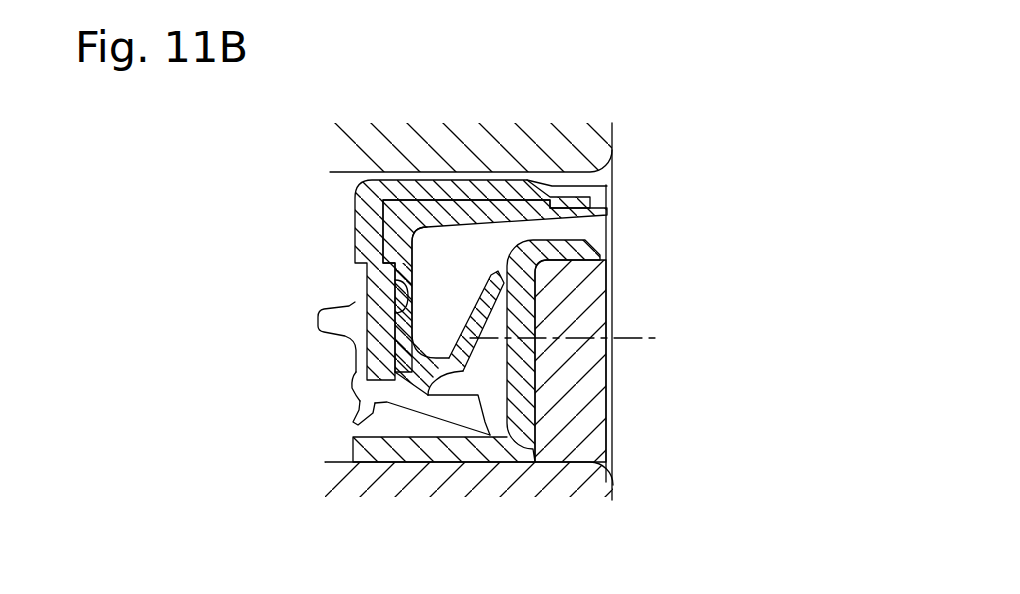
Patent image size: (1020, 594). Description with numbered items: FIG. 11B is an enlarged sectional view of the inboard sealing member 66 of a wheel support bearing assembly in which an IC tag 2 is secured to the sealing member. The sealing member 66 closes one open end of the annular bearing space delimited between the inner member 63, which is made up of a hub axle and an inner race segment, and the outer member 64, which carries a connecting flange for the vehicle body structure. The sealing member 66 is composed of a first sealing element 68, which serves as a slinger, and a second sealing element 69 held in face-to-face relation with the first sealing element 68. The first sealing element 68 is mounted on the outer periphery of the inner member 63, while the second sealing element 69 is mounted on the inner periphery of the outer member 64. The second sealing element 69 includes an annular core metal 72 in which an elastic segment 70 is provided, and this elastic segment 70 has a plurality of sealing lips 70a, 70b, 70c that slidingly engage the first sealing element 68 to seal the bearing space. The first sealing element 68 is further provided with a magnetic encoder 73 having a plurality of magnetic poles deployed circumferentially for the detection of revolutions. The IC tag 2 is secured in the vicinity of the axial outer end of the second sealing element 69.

The IC tag 2 is at (605, 250).
The inner member 63 is at (605, 476).
The outer member 64 is at (590, 142).
The inboard sealing member 66 is at (347, 400).
The first sealing element 68 is at (498, 452).
The second sealing element 69 is at (349, 186).
The elastic segment 70 is at (405, 408).
The sealing lip 70a is at (480, 303).
The sealing lip 70b is at (452, 418).
The sealing lip 70c is at (357, 413).
The annular core metal 72 is at (367, 248).
The magnetic encoder 73 is at (590, 397).